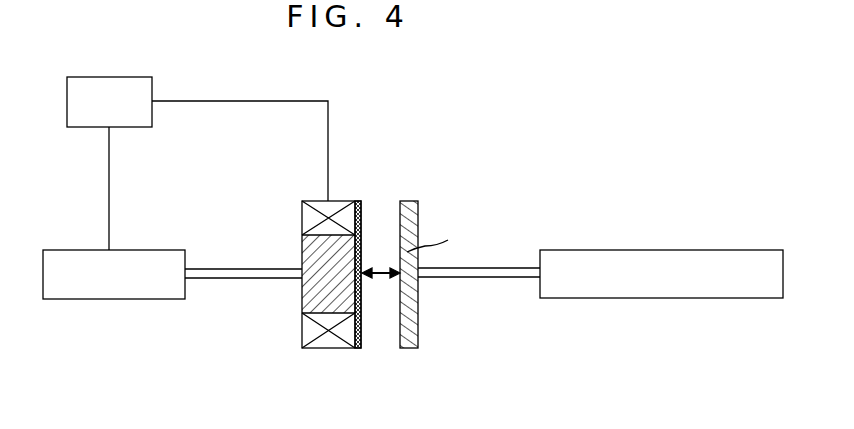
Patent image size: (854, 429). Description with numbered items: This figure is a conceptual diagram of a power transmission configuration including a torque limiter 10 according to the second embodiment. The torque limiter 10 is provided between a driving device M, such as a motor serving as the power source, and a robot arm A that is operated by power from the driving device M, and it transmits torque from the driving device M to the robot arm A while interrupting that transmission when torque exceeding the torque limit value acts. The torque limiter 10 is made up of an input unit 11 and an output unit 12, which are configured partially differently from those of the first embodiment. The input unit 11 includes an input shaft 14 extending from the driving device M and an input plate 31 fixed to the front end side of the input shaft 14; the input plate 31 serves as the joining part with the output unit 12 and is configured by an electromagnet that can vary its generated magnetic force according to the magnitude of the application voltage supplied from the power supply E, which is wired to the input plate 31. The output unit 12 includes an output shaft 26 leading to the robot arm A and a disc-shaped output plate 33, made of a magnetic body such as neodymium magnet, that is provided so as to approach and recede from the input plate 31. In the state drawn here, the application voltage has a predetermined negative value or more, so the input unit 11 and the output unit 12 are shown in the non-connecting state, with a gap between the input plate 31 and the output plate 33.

The power supply E is at (140, 76).
The driving device M is at (153, 249).
The robot arm A is at (638, 249).
The torque limiter 10 is at (438, 102).
The input unit 11 is at (276, 229).
The output unit 12 is at (495, 240).
The input shaft 14 is at (224, 277).
The output shaft 26 is at (487, 276).
The input plate 31 is at (340, 349).
The output plate 33 is at (439, 238).